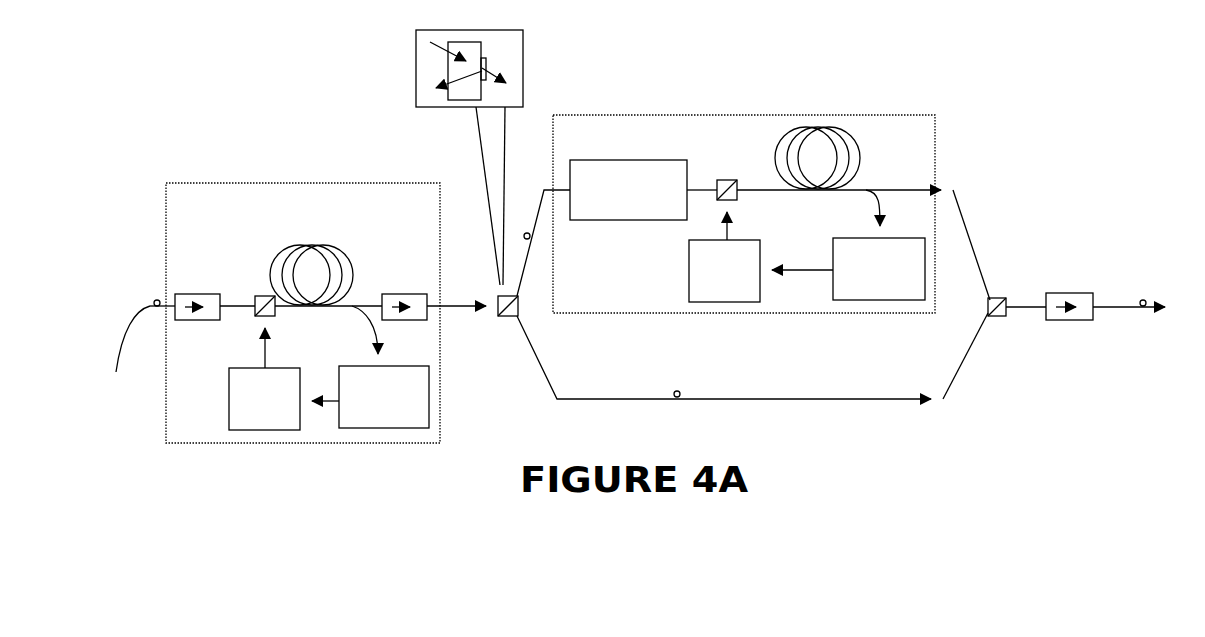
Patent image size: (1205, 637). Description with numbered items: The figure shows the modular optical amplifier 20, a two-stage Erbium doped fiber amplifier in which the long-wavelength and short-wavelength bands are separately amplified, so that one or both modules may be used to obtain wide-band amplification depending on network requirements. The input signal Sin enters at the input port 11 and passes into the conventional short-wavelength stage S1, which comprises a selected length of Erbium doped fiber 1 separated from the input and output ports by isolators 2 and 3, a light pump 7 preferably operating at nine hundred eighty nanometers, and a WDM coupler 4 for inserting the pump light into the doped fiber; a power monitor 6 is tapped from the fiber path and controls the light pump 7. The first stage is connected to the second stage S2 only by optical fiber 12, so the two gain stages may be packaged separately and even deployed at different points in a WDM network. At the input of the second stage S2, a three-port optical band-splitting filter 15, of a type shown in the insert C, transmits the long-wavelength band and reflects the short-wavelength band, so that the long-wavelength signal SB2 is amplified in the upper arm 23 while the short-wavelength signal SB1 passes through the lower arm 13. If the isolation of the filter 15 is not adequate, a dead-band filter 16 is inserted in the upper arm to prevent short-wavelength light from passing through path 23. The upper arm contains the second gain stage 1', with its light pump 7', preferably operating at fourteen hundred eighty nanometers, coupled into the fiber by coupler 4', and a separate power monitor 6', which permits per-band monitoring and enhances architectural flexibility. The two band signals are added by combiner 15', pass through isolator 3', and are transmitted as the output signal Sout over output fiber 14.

The Erbium doped fiber 1 is at (304, 254).
The second gain stage Erbium doped fiber 1' is at (832, 131).
The input isolator 2 is at (187, 294).
The output isolator 3 is at (394, 273).
The isolator 3' is at (1050, 273).
The WDM coupler 4 is at (247, 277).
The coupler 4' is at (731, 161).
The power monitor 6 is at (393, 390).
The power monitor 6' is at (848, 245).
The light pump 7 is at (264, 414).
The light pump 7' is at (693, 257).
The input port 11 is at (126, 355).
The optical fiber 12 is at (466, 310).
The lower arm 13 is at (836, 399).
The output fiber 14 is at (1112, 307).
The three-port optical band-splitting filter 15 is at (484, 274).
The combiner 15' is at (1015, 339).
The dead-band filter 16 is at (618, 160).
The modular optical amplifier 20 is at (424, 146).
The upper arm 23 is at (538, 206).
The insert C is at (523, 65).
The short-wavelength stage S1 is at (163, 427).
The second stage S2 is at (712, 113).
The input signal Sin is at (141, 284).
The output signal Sout is at (1157, 349).
The short-wavelength signal SB1 is at (758, 379).
The long-wavelength signal SB2 is at (839, 172).